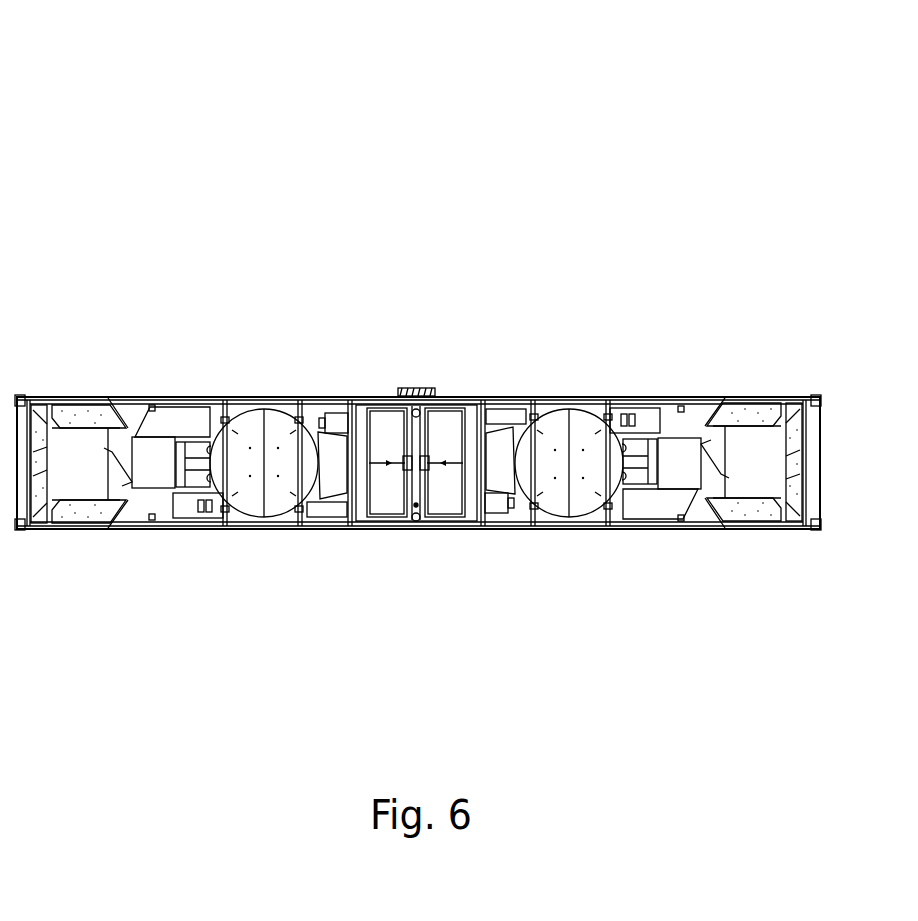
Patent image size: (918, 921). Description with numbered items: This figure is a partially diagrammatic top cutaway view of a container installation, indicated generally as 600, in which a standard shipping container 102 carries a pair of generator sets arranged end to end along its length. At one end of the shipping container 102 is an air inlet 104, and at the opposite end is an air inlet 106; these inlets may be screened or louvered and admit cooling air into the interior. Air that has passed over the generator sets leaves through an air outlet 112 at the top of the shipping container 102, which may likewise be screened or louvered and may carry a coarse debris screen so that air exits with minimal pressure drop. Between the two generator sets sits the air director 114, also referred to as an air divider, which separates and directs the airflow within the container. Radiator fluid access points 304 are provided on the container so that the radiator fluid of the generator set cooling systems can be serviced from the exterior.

The modular container system 600 is at (125, 63).
The air outlet 112 is at (465, 372).
The shipping container 102 is at (693, 398).
The air inlet 106 is at (78, 398).
The air inlet 104 is at (756, 397).
The radiator fluid access points 304 is at (328, 398).
The air director 114 is at (447, 495).